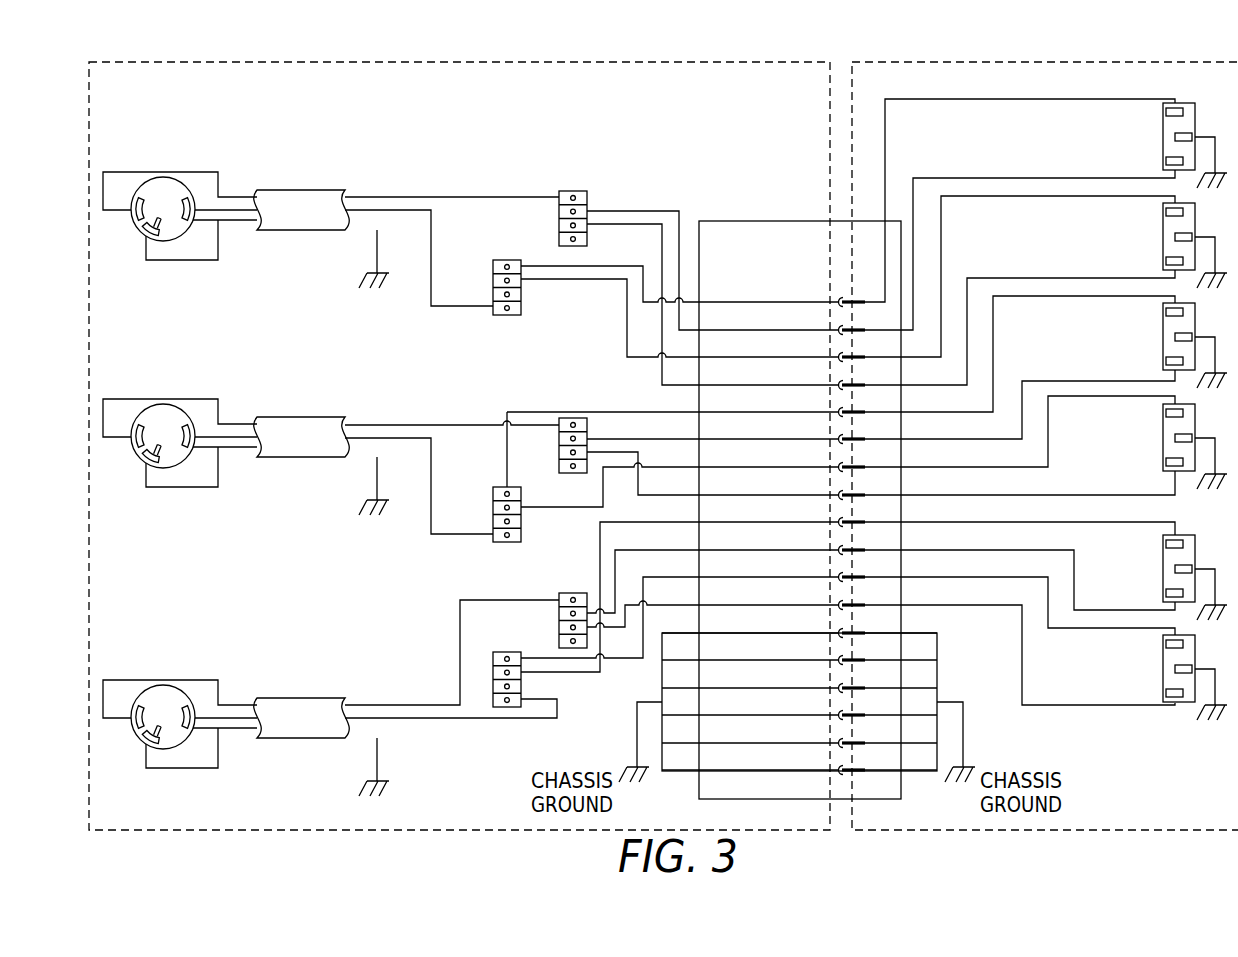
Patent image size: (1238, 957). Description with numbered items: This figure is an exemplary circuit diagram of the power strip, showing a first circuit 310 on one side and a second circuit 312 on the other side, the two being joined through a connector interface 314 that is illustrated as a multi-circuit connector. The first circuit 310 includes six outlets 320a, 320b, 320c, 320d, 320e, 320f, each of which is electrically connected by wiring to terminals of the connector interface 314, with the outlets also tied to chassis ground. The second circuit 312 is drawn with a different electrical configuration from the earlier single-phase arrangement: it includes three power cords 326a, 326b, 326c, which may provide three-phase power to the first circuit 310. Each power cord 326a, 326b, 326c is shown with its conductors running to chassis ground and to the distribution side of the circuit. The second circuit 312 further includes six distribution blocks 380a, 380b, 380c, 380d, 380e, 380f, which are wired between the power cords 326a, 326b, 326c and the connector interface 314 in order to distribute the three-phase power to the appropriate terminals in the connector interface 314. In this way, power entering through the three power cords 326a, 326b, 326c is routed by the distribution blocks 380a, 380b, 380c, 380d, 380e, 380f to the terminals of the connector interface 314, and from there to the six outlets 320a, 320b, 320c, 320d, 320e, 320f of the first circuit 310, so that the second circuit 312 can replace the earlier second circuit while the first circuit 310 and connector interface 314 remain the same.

The first circuit 310 is at (1227, 90).
The second circuit 312 is at (813, 90).
The connector interface 314 is at (770, 221).
The outlet 320a is at (1163, 134).
The outlet 320b is at (1163, 234).
The outlet 320c is at (1163, 334).
The outlet 320d is at (1163, 435).
The outlet 320e is at (1163, 567).
The outlet 320f is at (1163, 667).
The power cord 326a is at (163, 176).
The power cord 326b is at (163, 403).
The power cord 326c is at (163, 684).
The distribution block 380a is at (573, 191).
The distribution block 380b is at (507, 260).
The distribution block 380c is at (573, 418).
The distribution block 380d is at (507, 487).
The distribution block 380e is at (573, 593).
The distribution block 380f is at (507, 652).